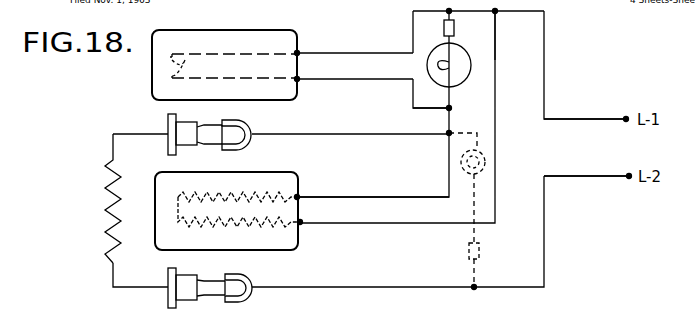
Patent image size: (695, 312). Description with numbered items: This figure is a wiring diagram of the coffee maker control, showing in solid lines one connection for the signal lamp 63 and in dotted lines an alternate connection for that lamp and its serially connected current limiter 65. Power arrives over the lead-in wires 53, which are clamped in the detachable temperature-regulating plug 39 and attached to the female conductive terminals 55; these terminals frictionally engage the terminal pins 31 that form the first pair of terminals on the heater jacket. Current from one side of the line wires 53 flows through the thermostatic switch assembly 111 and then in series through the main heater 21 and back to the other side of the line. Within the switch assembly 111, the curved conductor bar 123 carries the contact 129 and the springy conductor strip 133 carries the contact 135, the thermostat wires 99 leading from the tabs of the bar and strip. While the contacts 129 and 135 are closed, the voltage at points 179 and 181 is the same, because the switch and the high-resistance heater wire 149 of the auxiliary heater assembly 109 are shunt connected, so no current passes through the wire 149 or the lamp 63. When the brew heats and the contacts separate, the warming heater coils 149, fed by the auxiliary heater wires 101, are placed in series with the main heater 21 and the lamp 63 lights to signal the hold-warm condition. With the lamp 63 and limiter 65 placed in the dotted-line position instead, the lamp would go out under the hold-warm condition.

The thermostatic switch assembly 111 is at (284, 22).
The springy conductor strip 133 is at (245, 55).
The contact 135 is at (190, 54).
The contact 129 is at (172, 78).
The curved conductor bar 123 is at (290, 80).
The thermostat wires 99 is at (366, 44).
The current limiter 65 is at (444, 28).
The glow lamp 63 is at (462, 48).
The circuit point 181 is at (497, 12).
The circuit point 179 is at (451, 108).
The lead-in wires 53 is at (590, 120).
The terminal pins 31 is at (216, 138).
The female conductive terminals 55 is at (251, 140).
The temperature-regulating connector or plug 39 is at (138, 287).
The main heater 21 is at (106, 214).
The heater assembly 109 is at (303, 171).
The high-resistance heater wire 149 is at (280, 226).
The auxiliary heater wires 101 is at (364, 203).